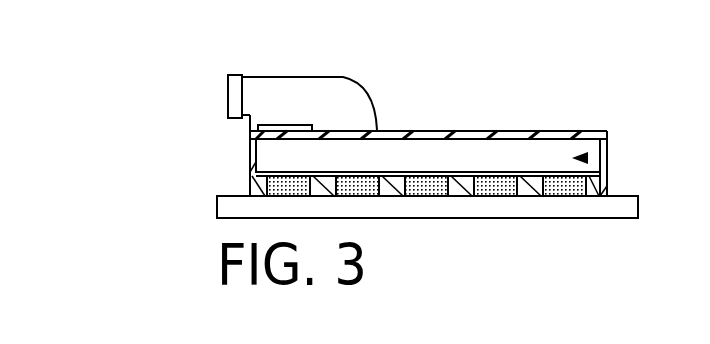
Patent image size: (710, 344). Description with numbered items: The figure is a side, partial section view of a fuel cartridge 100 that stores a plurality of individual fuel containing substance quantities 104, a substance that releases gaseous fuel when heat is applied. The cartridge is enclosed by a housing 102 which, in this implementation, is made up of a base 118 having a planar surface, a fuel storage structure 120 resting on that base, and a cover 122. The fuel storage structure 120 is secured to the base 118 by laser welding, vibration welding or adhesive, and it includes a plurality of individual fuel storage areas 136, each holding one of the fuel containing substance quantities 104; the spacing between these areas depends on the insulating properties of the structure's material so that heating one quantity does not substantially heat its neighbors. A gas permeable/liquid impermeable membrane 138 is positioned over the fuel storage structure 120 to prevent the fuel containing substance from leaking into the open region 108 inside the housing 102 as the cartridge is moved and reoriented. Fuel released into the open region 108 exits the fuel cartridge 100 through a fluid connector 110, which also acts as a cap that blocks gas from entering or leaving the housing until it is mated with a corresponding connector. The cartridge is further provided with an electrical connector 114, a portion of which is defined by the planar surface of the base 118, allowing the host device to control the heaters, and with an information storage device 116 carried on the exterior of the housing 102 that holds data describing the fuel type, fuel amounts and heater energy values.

The fuel cartridge 100 is at (584, 62).
The housing 102 is at (409, 124).
The fuel containing substance quantities 104 is at (426, 237).
The open region 108 is at (639, 150).
The fluid connector 110 is at (347, 77).
The electrical connector 114 is at (237, 195).
The information storage device 116 is at (310, 128).
The base 118 is at (598, 218).
The fuel storage structure 120 is at (525, 197).
The cover 122 is at (596, 131).
The fuel storage areas 136 is at (595, 187).
The gas permeable/liquid impermeable membrane 138 is at (428, 131).